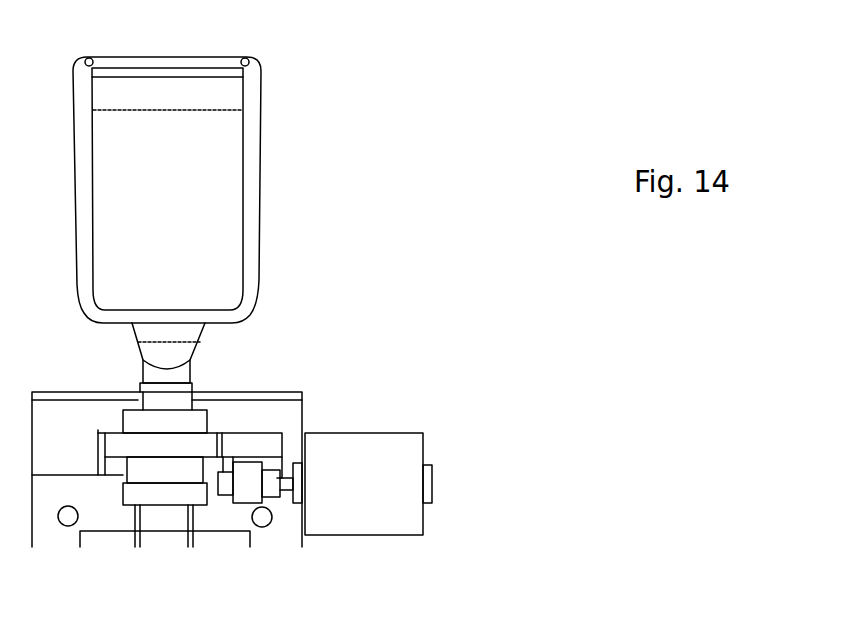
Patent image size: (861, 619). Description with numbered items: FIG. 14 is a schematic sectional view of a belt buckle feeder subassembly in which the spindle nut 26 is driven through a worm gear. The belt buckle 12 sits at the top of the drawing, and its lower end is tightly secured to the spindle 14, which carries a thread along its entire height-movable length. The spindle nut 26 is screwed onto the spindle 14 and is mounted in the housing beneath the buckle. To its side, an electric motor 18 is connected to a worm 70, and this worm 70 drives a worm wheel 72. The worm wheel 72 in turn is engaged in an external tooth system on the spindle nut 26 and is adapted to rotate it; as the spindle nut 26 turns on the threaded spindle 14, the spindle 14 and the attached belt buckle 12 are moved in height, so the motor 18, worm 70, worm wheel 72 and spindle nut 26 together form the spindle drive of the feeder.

The belt buckle 12 is at (227, 247).
The spindle 14 is at (152, 399).
The spindle nut 26 is at (177, 423).
The worm wheel 72 is at (242, 443).
The worm 70 is at (243, 482).
The electric motor 18 is at (387, 453).